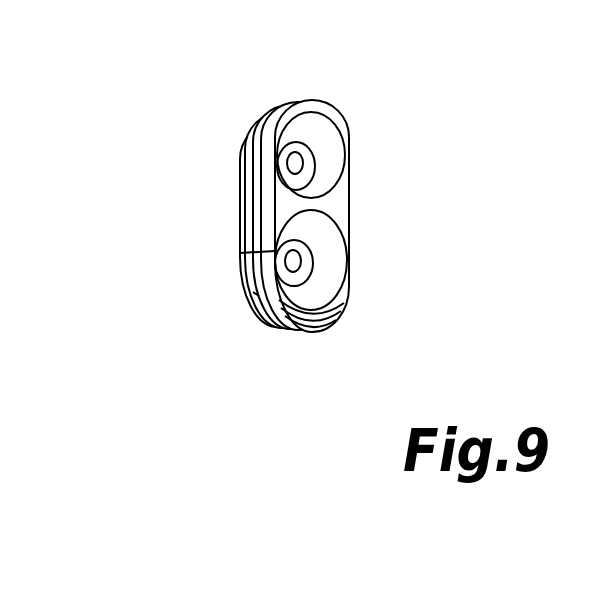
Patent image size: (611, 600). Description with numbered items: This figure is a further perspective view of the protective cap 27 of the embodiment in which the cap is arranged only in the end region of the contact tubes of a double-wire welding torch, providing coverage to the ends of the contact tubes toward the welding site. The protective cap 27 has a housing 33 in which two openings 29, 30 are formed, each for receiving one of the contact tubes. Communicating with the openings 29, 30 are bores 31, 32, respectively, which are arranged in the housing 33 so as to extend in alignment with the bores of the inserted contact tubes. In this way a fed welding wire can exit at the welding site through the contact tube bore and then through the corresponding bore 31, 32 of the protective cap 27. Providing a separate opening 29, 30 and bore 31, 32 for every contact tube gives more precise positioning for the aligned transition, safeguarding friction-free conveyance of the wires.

The protective cap 27 is at (247, 253).
The opening 29 is at (323, 150).
The opening 30 is at (323, 262).
The bore 31 is at (296, 166).
The bore 32 is at (295, 268).
The housing 33 is at (331, 212).